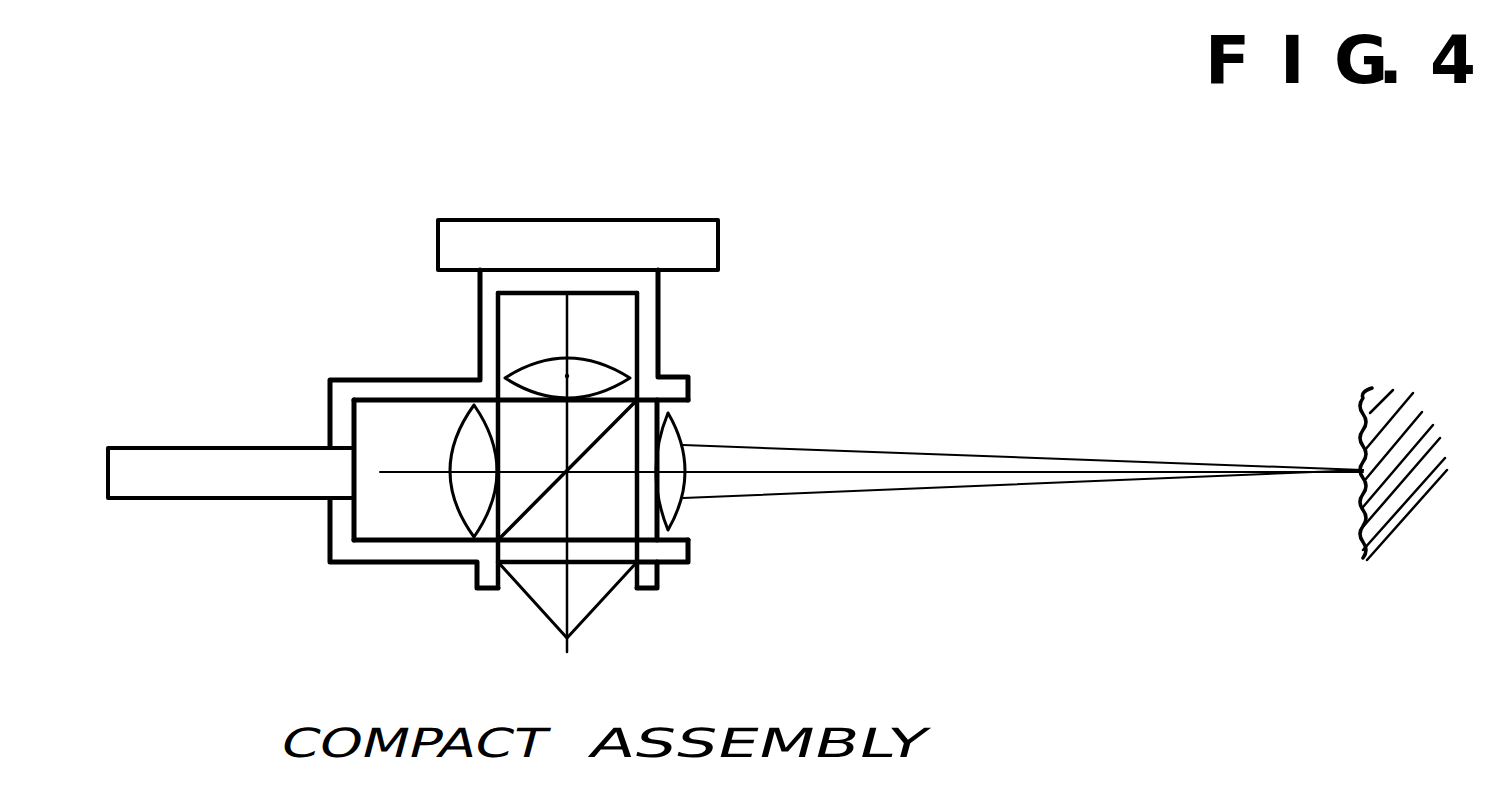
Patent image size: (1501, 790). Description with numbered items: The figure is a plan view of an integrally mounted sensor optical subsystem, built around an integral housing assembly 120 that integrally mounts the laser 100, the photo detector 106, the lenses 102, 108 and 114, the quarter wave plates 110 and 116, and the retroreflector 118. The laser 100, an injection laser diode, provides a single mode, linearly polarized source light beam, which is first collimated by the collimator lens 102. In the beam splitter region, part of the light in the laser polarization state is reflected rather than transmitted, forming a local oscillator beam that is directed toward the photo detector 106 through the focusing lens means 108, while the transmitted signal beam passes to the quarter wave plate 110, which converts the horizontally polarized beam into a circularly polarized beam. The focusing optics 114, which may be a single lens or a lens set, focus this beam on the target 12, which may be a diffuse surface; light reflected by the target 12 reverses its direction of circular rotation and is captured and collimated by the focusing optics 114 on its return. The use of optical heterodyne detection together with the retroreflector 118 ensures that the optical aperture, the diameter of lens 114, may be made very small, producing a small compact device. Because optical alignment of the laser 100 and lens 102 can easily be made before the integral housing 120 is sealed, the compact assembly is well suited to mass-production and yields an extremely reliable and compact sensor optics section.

The target 12 is at (1361, 405).
The injection laser diode 100 is at (263, 448).
The collimator lens 102 is at (444, 583).
The photo detector 106 is at (707, 188).
The focusing lens means 108 is at (732, 320).
The quarter wave plate 110 is at (745, 399).
The focusing optics 114 is at (808, 423).
The quarter wave plate 116 is at (683, 618).
The retroreflector 118 is at (598, 650).
The integral housing assembly 120 is at (410, 387).